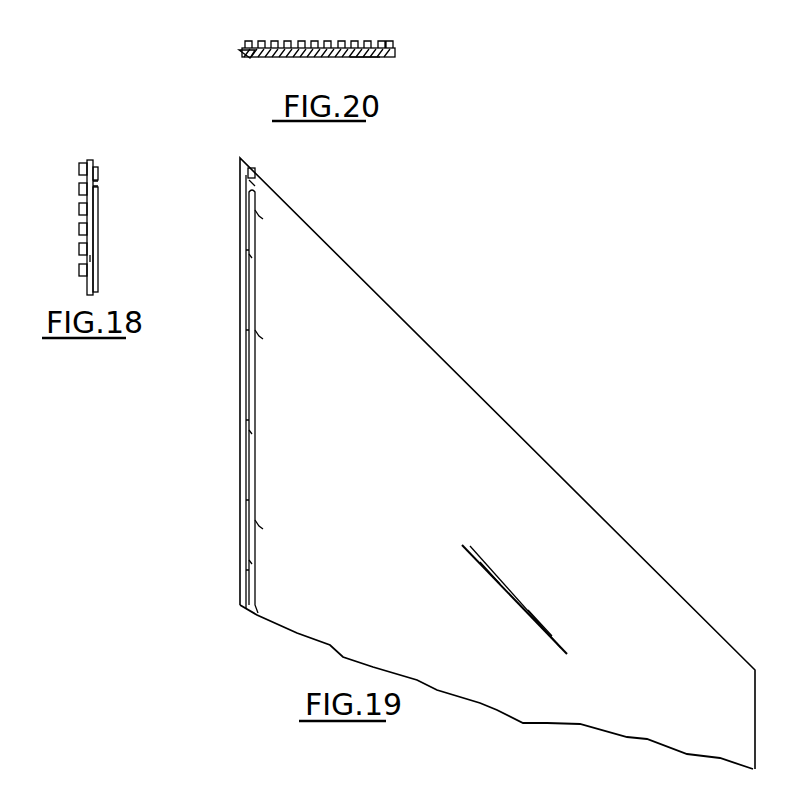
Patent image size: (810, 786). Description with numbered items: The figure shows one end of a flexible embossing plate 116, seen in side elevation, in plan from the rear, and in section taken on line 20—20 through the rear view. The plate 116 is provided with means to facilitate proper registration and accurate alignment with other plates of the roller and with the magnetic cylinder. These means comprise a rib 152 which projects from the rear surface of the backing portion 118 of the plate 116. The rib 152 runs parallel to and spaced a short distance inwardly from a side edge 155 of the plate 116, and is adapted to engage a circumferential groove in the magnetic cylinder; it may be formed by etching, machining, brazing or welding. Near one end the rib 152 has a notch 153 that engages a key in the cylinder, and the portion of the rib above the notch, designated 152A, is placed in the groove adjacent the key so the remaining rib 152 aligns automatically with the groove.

In FIG. 20, the plate 116 is at (395, 47).
In FIG. 18, the plate 116 is at (84, 160).
In FIG. 19, the plate 116 is at (467, 383).
In FIG. 20, the backing portion 118 is at (362, 57).
In FIG. 18, the backing portion 118 is at (90, 258).
In FIG. 19, the backing portion 118 is at (520, 606).
In FIG. 20, the rib 152 is at (249, 57).
In FIG. 18, the rib 152 is at (98, 217).
In FIG. 19, the rib 152 is at (250, 336).
In FIG. 18, the portion of the rib above the notch 152A is at (98, 168).
In FIG. 19, the portion of the rib above the notch 152A is at (257, 175).
In FIG. 18, the notch 153 is at (99, 184).
In FIG. 19, the notch 153 is at (246, 184).
In FIG. 20, the side edge 155 is at (245, 50).
In FIG. 18, the side edge 155 is at (87, 203).
In FIG. 19, the side edge 155 is at (240, 430).
In FIG. 19, the section line for FIG. 20 is at (203, 278).